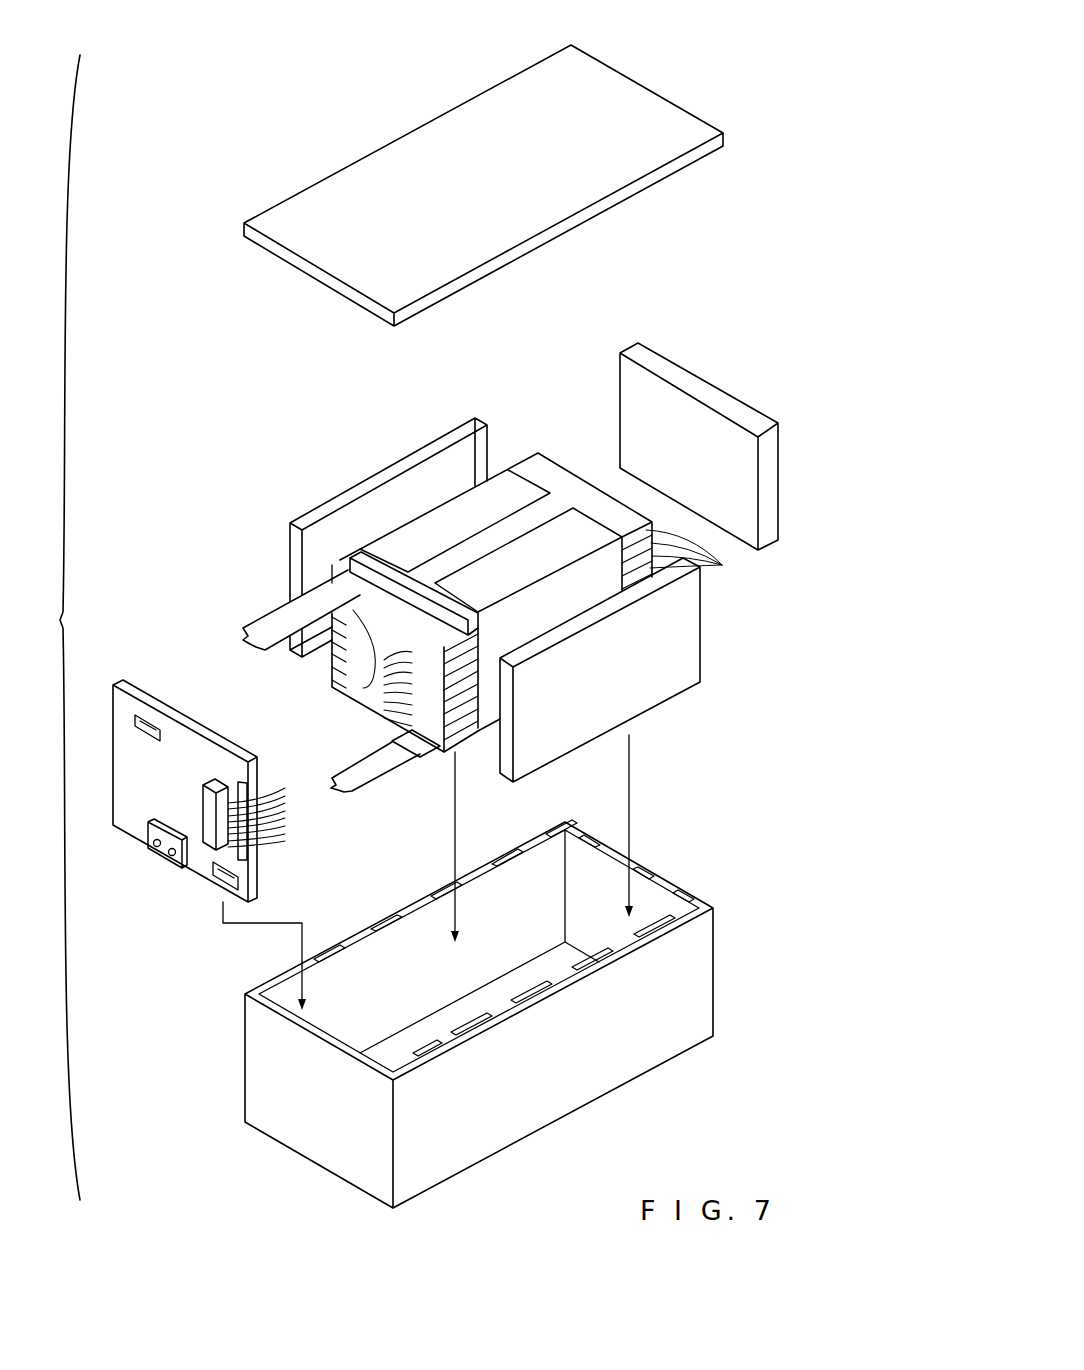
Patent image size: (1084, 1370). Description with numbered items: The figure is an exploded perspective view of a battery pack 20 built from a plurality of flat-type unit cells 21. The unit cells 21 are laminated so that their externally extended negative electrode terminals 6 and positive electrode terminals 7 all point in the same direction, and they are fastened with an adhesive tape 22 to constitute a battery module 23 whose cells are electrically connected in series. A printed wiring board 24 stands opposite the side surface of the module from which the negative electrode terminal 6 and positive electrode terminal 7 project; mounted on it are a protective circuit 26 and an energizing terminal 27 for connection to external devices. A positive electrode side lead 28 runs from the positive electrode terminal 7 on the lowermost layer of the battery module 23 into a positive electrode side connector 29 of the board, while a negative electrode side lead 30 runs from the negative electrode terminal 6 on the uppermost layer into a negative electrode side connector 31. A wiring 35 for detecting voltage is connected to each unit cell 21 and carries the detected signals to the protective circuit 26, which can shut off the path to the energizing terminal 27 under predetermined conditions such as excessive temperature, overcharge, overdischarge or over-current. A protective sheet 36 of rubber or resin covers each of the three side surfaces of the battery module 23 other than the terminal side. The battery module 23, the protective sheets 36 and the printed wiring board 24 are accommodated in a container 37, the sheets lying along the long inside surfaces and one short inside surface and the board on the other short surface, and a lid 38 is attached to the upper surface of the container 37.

The battery pack 20 is at (148, 210).
The lid 38 is at (663, 121).
The protective sheet 36 is at (353, 493).
The adhesive tape 22 is at (563, 535).
The battery module 23 is at (435, 505).
The positive electrode terminal 7 is at (413, 638).
The negative electrode side lead 30 is at (250, 626).
The negative electrode terminal 6 is at (330, 583).
The unit cell 21 is at (722, 565).
The wiring 35 is at (365, 688).
The positive electrode side lead 28 is at (374, 770).
The printed wiring board 24 is at (147, 686).
The negative electrode side connector 31 is at (153, 723).
The protective circuit 26 is at (218, 783).
The energizing terminal 27 is at (168, 857).
The positive electrode side connector 29 is at (242, 878).
The container 37 is at (705, 972).